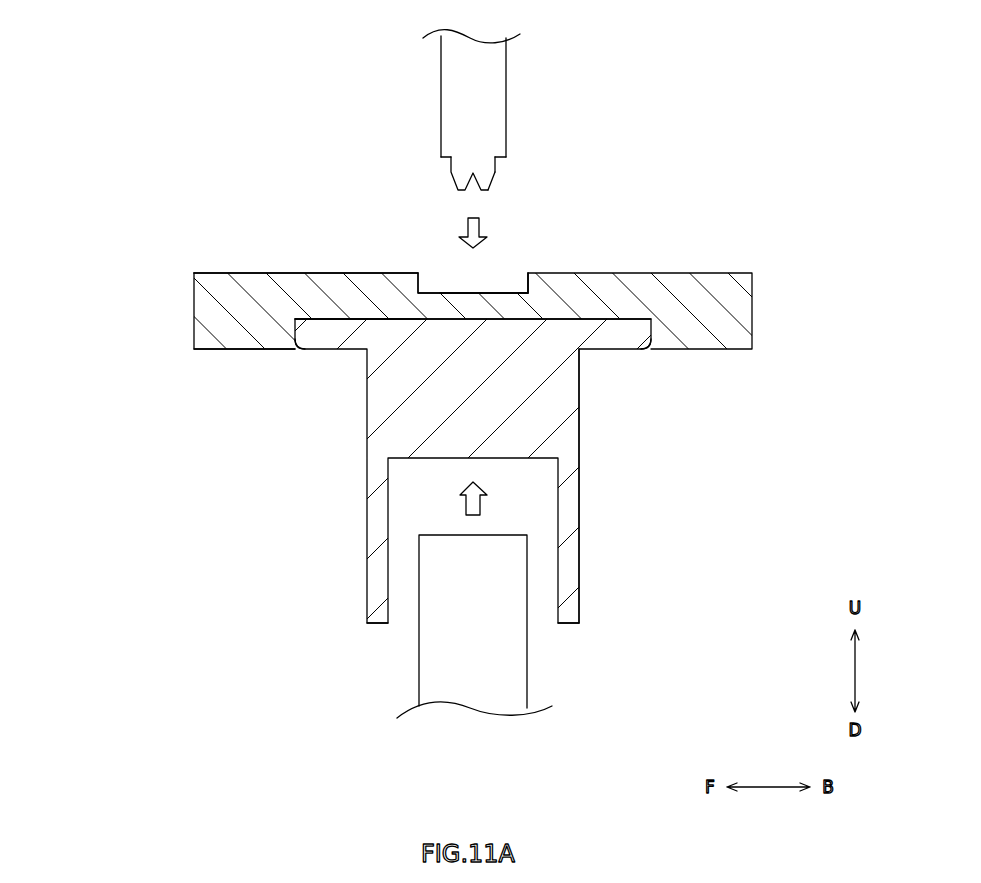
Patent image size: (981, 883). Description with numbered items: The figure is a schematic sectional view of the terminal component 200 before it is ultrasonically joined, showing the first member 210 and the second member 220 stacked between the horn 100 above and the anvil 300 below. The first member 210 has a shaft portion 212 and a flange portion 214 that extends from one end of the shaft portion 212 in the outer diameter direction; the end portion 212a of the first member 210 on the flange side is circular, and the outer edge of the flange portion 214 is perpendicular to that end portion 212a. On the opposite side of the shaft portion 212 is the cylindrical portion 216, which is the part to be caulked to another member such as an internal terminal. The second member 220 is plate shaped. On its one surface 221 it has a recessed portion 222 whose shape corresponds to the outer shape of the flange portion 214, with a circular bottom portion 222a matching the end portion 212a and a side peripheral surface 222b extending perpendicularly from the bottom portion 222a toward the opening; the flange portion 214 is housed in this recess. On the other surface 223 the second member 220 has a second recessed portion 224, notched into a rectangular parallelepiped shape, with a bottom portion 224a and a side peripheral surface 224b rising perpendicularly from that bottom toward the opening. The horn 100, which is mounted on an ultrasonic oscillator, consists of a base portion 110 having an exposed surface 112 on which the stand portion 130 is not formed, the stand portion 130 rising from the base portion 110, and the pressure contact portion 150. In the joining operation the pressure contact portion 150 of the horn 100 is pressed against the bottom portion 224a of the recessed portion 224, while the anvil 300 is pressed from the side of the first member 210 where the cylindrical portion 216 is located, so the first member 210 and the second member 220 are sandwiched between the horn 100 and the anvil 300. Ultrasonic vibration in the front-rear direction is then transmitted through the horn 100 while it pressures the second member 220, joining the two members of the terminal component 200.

The horn 100 is at (467, 139).
The base portion 110 is at (421, 107).
The exposed surface 112 is at (449, 165).
The stand portion 130 is at (497, 167).
The pressure contact portion 150 is at (492, 184).
The terminal component 200 is at (747, 195).
The first member 210 is at (592, 459).
The shaft portion 212 is at (582, 423).
The end portion 212a is at (393, 317).
The flange portion 214 is at (632, 352).
The cylindrical portion 216 is at (580, 565).
The second member 220 is at (183, 311).
The one surface 221 is at (205, 349).
The recessed portion 222 is at (600, 330).
The bottom portion 222a is at (340, 323).
The side peripheral surface 222b is at (305, 350).
The other surface 223 is at (217, 272).
The recessed portion 224 is at (432, 292).
The bottom portion 224a is at (503, 290).
The side peripheral surface 224b is at (528, 282).
The anvil 300 is at (409, 678).